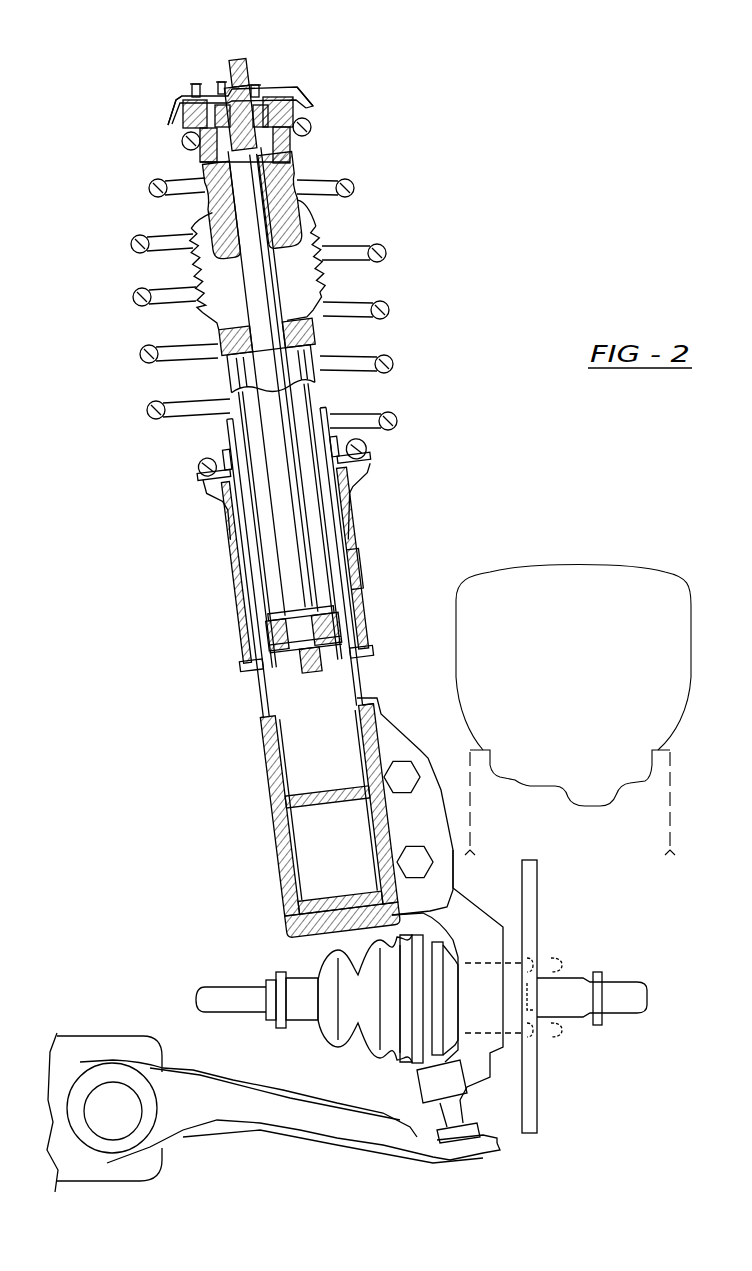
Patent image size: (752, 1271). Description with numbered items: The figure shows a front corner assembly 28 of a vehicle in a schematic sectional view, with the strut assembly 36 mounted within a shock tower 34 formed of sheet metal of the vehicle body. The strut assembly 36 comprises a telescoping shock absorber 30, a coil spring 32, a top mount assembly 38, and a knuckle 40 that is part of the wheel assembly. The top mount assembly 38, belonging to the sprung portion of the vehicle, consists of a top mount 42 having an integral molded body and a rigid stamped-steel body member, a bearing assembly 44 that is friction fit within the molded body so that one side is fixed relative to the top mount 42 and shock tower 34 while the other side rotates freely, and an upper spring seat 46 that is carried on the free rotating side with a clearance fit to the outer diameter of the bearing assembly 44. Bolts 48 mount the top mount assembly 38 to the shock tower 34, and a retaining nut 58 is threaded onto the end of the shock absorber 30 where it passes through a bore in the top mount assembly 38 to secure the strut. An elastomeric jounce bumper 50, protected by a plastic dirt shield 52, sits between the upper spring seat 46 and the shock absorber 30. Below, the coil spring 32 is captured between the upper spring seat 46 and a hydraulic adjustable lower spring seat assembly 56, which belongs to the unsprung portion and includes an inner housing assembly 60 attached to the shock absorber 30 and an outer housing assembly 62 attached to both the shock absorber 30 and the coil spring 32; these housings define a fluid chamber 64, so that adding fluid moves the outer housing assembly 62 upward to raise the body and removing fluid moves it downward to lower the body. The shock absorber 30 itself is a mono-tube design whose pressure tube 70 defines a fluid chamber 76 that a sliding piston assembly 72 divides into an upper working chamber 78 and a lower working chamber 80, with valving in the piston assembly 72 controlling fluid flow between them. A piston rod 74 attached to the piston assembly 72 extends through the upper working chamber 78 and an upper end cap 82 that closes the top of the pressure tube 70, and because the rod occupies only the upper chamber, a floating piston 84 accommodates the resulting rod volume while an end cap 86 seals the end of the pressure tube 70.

The front corner assembly 28 is at (553, 172).
The shock absorber 30 is at (296, 679).
The coil spring 32 is at (355, 188).
The shock tower 34 is at (238, 96).
The strut assembly 36 is at (195, 533).
The top mount assembly 38 is at (314, 86).
The knuckle 40 is at (467, 917).
The top mount 42 is at (178, 104).
The bearing assembly 44 is at (316, 103).
The upper spring seat 46 is at (188, 137).
The bolts 48 is at (196, 86).
The elastomeric jounce bumper 50 is at (200, 200).
The plastic dirt shield 52 is at (325, 238).
The hydraulic adjustable lower spring seat assembly 56 is at (344, 569).
The retaining nut 58 is at (254, 84).
The inner housing assembly 60 is at (368, 568).
The outer housing assembly 62 is at (362, 480).
The fluid chamber 64 is at (215, 497).
The pressure tube 70 is at (260, 687).
The piston assembly 72 is at (340, 622).
The piston rod 74 is at (275, 428).
The fluid chamber 76 is at (327, 757).
The upper working chamber 78 is at (305, 410).
The lower working chamber 80 is at (313, 697).
The upper end cap 82 is at (220, 338).
The floating piston 84 is at (323, 806).
The end cap 86 is at (313, 930).